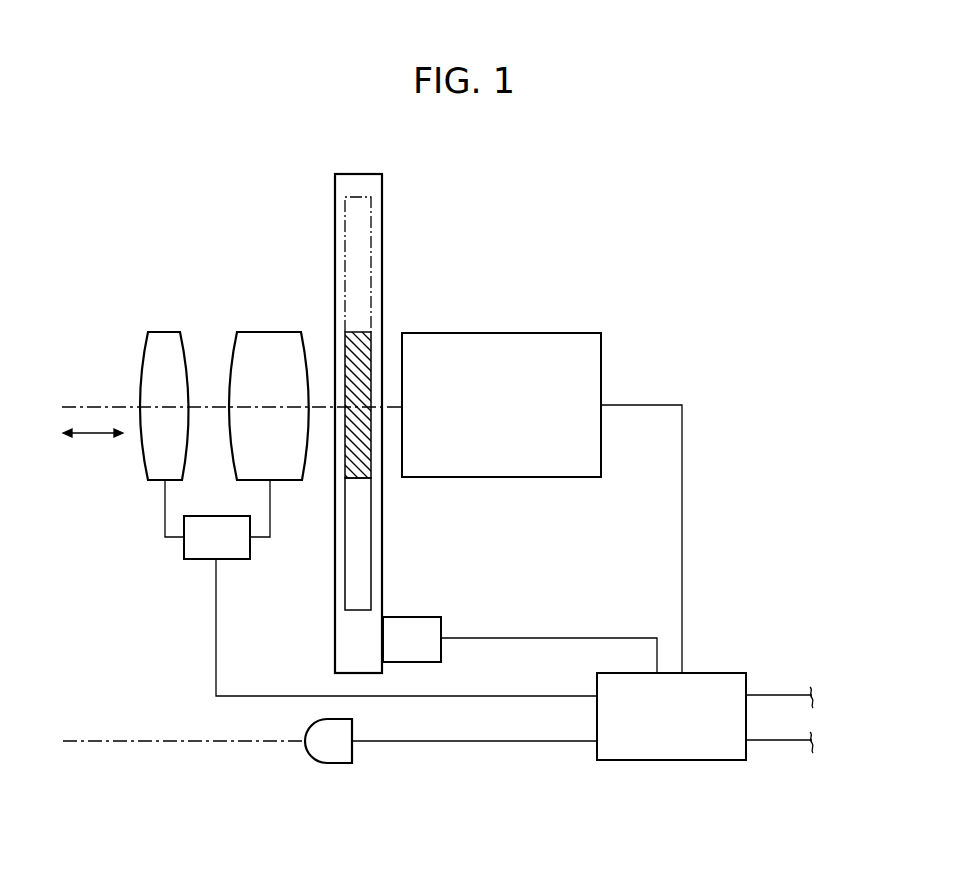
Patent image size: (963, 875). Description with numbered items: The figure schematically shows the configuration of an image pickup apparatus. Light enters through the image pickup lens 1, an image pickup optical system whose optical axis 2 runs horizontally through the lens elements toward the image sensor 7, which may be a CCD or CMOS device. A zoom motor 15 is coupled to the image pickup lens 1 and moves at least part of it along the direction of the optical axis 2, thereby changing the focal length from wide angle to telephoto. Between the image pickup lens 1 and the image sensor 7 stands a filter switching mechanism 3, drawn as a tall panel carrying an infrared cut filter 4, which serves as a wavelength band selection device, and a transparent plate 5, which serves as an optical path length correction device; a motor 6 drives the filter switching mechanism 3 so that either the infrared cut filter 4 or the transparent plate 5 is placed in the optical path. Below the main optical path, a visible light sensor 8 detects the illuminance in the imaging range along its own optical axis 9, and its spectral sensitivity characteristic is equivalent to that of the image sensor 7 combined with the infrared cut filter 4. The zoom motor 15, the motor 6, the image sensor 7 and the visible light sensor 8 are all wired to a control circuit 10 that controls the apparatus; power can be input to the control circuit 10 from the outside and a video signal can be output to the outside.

The image pickup lens 1 is at (248, 462).
The optical axis 2 is at (221, 407).
The filter switching mechanism 3 is at (382, 227).
The infrared cut filter 4 is at (350, 352).
The transparent plate 5 is at (353, 569).
The motor 6 is at (419, 617).
The image sensor 7 is at (498, 333).
The visible light sensor 8 is at (338, 763).
The optical axis of visible light sensor 9 is at (172, 741).
The control circuit 10 is at (697, 760).
The zoom motor 15 is at (192, 560).